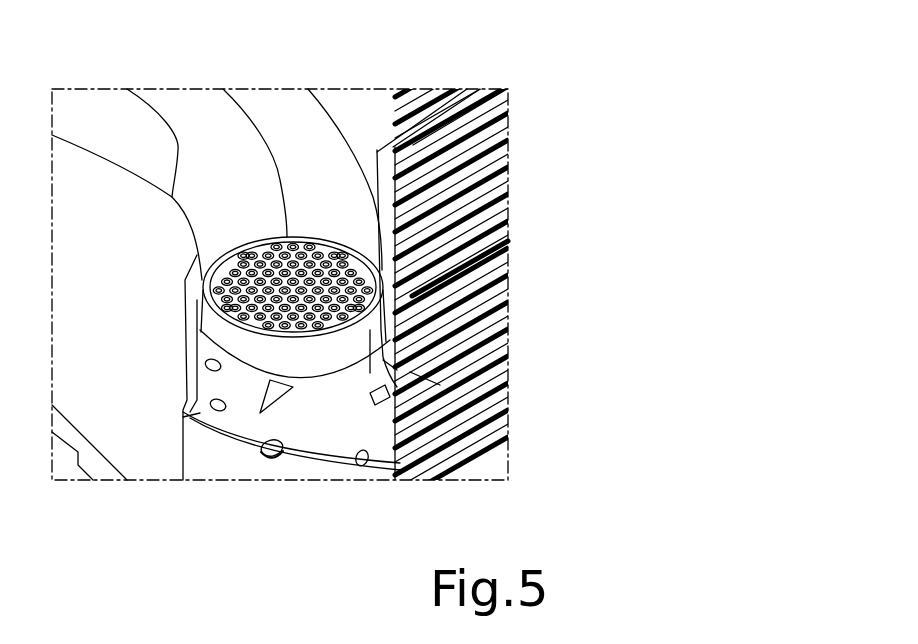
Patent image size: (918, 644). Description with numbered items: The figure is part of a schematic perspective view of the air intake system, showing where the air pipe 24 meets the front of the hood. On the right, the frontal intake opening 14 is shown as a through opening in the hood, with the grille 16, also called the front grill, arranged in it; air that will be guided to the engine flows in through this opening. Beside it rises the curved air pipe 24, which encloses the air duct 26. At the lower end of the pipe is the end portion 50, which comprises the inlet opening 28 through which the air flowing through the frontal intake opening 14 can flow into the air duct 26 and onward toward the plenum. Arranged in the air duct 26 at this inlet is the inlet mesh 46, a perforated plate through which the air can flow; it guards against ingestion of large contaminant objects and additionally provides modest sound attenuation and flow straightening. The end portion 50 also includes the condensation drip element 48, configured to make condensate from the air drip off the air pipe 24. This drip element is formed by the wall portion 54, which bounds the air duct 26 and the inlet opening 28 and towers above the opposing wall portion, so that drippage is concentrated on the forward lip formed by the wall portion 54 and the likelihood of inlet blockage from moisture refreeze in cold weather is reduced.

The frontal intake opening 14 is at (510, 253).
The grille 16 is at (503, 136).
The air pipe 24 is at (313, 130).
The air duct 26 is at (207, 312).
The inlet opening 28 is at (333, 372).
The inlet mesh 46 is at (267, 336).
The condensation drip element 48 is at (373, 372).
The end portion 50 is at (412, 297).
The wall portion 54 is at (410, 372).